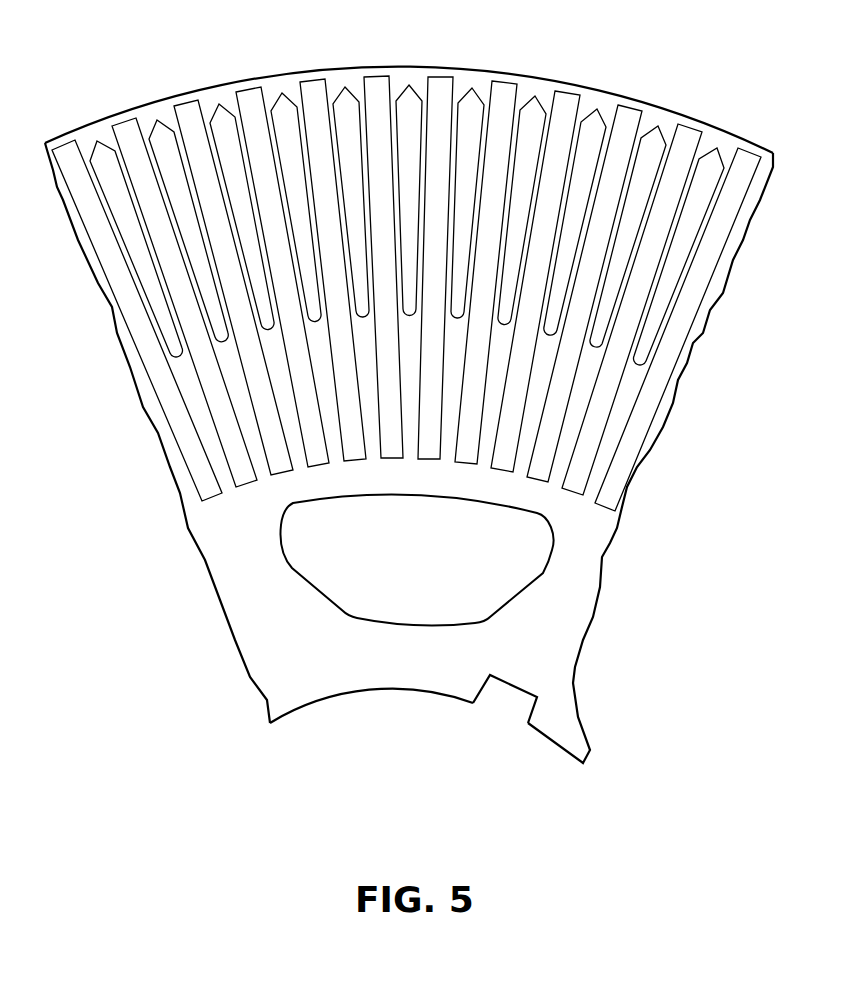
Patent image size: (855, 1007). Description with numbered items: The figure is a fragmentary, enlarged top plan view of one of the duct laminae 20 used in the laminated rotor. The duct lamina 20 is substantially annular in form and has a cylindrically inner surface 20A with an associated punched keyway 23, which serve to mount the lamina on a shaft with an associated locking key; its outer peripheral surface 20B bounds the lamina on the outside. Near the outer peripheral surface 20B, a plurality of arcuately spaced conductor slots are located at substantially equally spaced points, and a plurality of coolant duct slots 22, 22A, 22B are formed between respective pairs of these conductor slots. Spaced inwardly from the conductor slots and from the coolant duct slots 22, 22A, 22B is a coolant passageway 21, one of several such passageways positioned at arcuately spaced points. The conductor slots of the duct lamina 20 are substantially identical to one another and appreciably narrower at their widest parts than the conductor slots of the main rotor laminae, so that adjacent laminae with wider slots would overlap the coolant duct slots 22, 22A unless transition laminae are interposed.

The duct lamina 20 is at (409, 385).
The cylindrically inner surface 20A is at (369, 695).
The outer arcuate edge 20B is at (668, 111).
The coolant passageway 21 is at (321, 569).
The coolant duct slot 22 is at (508, 90).
The coolant duct slot 22A is at (566, 96).
The coolant duct slot 22B is at (628, 112).
The punched keyway 23 is at (513, 688).